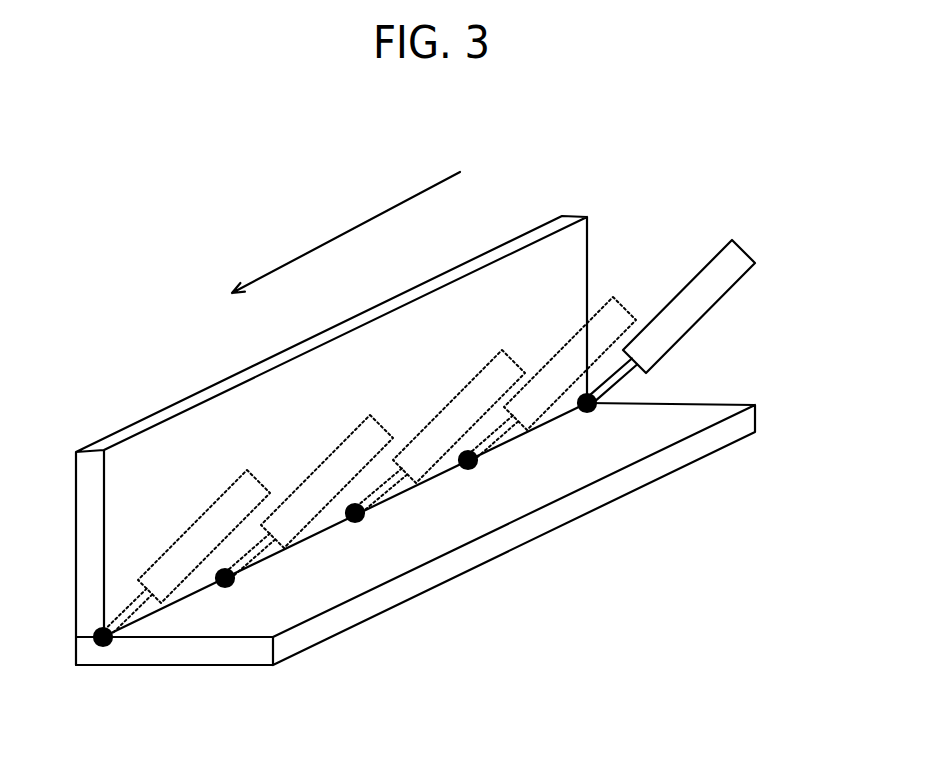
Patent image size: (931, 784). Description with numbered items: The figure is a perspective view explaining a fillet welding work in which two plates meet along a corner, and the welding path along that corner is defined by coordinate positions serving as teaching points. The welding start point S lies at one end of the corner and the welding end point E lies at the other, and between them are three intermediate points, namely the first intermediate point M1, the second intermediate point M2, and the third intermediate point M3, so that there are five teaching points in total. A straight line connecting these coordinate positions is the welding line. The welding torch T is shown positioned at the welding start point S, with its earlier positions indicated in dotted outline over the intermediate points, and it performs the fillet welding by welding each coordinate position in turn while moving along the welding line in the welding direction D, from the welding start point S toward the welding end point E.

The welding torch T is at (735, 306).
The welding direction D is at (329, 240).
The welding start point S is at (615, 418).
The first intermediate point M1 is at (495, 479).
The second intermediate point M2 is at (385, 530).
The third intermediate point M3 is at (250, 592).
The welding end point E is at (130, 648).